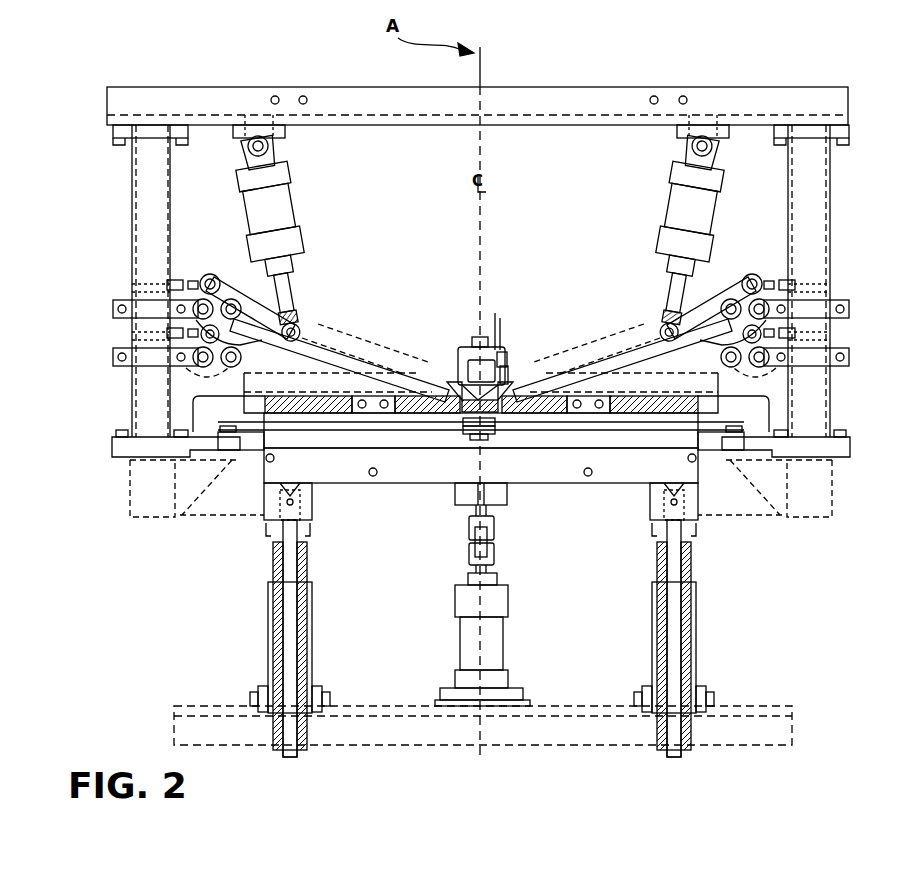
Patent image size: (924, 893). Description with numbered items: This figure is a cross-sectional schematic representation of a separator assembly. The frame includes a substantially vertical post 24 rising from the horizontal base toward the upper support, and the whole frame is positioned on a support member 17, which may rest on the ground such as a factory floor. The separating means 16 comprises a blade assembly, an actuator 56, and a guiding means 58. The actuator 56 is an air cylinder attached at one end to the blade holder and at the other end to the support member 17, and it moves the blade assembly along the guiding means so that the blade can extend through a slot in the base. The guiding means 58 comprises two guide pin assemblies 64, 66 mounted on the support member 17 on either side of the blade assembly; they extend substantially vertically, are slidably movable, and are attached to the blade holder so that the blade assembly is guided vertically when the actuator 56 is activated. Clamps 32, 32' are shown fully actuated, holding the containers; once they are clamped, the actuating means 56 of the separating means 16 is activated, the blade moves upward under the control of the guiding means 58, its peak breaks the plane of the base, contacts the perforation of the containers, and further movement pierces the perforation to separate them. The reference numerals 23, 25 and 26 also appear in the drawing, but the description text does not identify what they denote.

The separating means 16 is at (508, 597).
The support member 17 is at (497, 521).
The pneumatic tilt cylinder 23 is at (692, 166).
The post 24 is at (778, 350).
The left support bracket 25 is at (165, 435).
The right support bracket 26 is at (795, 412).
The clamp 32 is at (600, 364).
The clamp 32' is at (362, 364).
The actuator 56 is at (517, 509).
The guiding means 58 is at (332, 510).
The guide pin assembly 64 is at (657, 572).
The guide pin assembly 66 is at (305, 572).